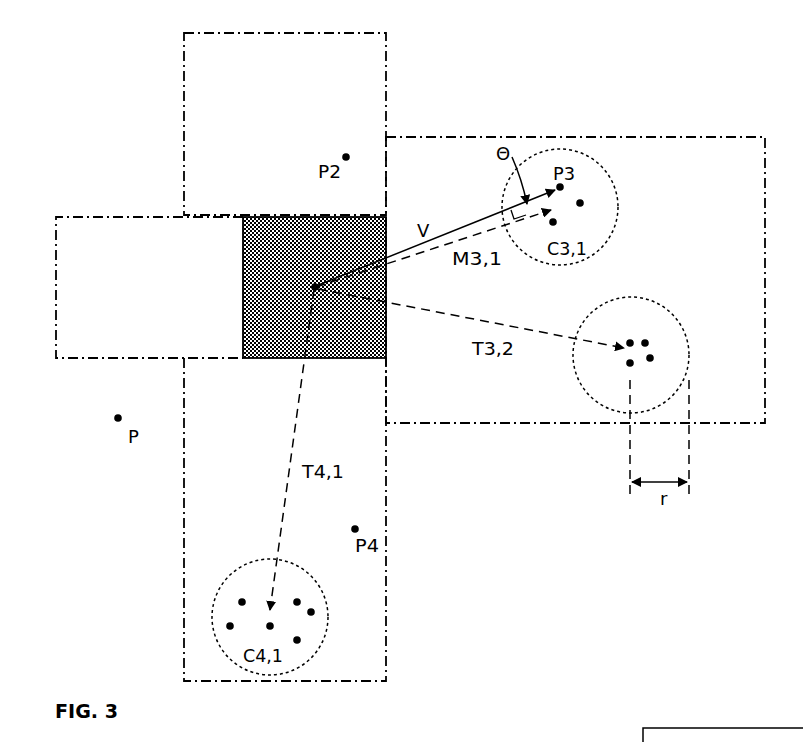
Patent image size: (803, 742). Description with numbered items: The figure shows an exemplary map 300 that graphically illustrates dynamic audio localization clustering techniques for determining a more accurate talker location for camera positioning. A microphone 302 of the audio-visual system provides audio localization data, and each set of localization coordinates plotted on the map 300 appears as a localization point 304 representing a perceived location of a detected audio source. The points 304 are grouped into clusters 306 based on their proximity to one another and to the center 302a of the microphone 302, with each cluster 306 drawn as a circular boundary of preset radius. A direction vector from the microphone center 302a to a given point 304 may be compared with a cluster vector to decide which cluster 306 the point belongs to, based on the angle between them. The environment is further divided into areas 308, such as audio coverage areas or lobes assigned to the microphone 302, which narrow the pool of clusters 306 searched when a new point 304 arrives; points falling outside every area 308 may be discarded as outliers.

The map 300 is at (106, 34).
The microphone 302 is at (285, 279).
The center of the microphone 302a is at (322, 300).
The localization point 304 is at (659, 347).
The cluster 306 is at (640, 294).
The area 308 is at (678, 135).